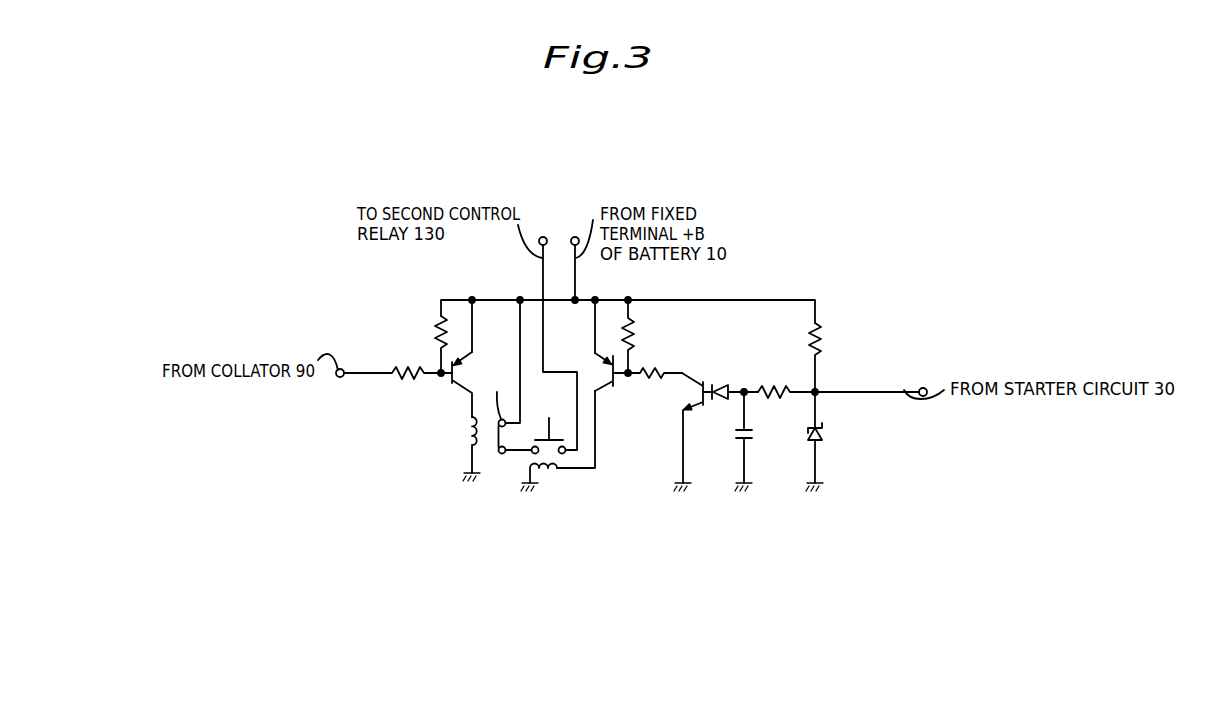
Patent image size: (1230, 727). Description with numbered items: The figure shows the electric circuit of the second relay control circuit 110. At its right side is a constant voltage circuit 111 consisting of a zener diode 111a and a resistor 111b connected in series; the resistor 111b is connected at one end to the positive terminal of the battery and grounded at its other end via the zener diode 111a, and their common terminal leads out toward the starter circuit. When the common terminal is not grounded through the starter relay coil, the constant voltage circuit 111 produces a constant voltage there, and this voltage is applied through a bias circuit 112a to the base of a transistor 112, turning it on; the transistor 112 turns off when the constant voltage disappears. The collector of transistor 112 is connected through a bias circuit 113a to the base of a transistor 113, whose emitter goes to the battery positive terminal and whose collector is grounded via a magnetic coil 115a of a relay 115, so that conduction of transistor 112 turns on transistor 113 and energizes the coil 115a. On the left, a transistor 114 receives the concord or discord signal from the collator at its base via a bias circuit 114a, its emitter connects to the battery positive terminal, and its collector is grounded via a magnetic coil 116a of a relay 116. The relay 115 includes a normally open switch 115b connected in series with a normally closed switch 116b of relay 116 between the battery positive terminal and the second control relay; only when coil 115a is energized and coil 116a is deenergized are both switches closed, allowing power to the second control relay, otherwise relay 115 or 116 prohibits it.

The second relay control circuit 110 is at (768, 222).
The constant voltage circuit 111 is at (826, 375).
The zener diode 111a is at (802, 442).
The resistor 111b is at (808, 343).
The transistor 112 is at (693, 372).
The bias circuit 112a is at (732, 400).
The transistor 113 is at (606, 361).
The bias circuit 113a is at (635, 364).
The transistor 114 is at (457, 390).
The bias circuit 114a is at (432, 368).
The relay 115 is at (557, 480).
The magnetic coil 115a is at (548, 478).
The normally open switch 115b is at (548, 424).
The relay 116 is at (486, 460).
The magnetic coil 116a is at (463, 427).
The normally closed switch 116b is at (494, 411).